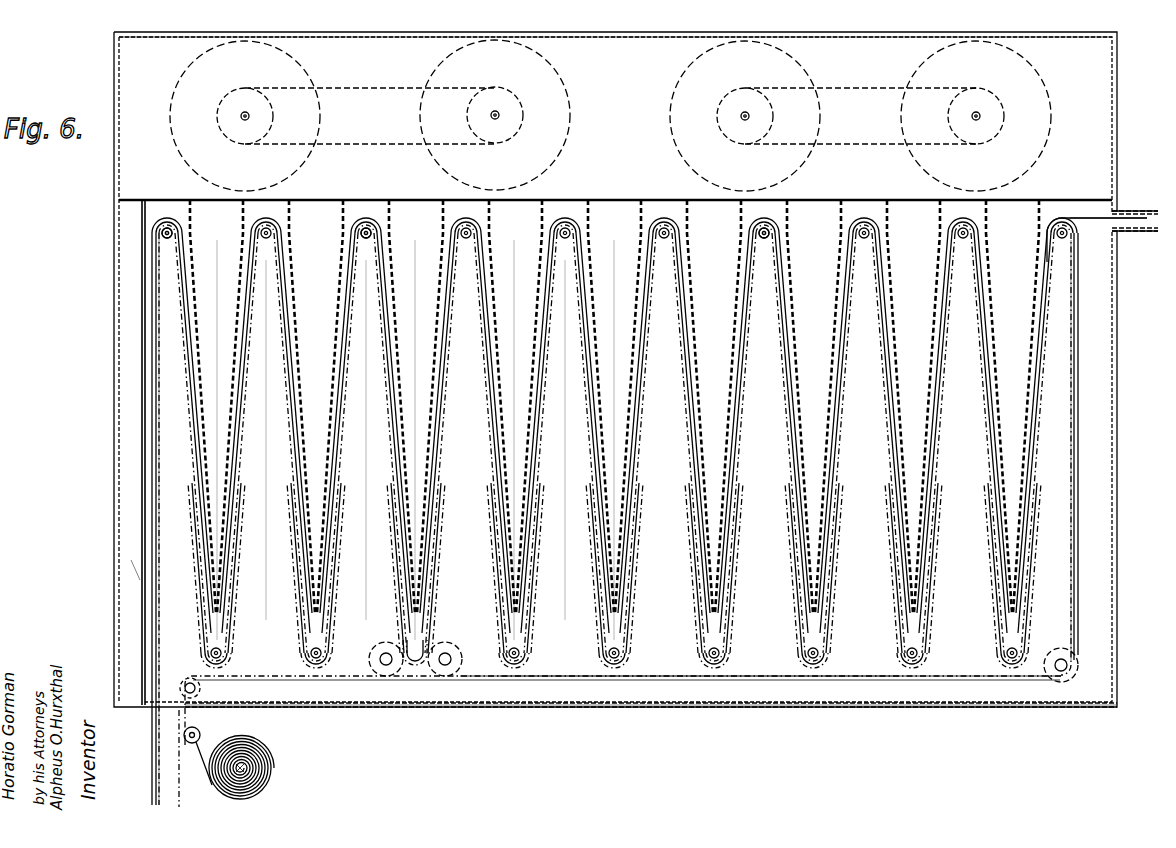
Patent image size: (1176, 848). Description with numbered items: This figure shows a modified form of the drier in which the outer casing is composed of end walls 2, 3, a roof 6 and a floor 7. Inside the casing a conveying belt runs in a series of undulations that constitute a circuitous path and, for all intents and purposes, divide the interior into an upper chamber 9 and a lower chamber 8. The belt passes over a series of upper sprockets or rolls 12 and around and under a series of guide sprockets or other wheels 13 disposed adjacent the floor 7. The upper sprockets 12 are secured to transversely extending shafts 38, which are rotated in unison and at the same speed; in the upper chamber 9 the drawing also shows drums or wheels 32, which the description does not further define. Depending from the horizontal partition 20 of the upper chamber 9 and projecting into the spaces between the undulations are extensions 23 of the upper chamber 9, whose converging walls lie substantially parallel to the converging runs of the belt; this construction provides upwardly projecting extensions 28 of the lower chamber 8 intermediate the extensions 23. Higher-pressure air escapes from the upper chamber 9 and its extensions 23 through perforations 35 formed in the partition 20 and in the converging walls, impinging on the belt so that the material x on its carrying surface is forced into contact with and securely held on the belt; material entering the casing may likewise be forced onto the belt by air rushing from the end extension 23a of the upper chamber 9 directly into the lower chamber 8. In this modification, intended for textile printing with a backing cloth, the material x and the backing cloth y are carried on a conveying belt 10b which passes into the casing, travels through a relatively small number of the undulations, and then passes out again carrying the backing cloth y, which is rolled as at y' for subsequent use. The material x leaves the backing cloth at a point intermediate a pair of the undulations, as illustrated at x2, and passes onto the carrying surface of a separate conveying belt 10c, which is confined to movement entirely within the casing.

The end wall 2 is at (114, 378).
The end wall 3 is at (1117, 340).
The roof 6 is at (624, 36).
The floor 7 is at (602, 704).
The lower chamber 8 is at (700, 687).
The upper chamber 9 is at (615, 187).
The upper sprockets or rolls 12 is at (165, 248).
The guide sprockets or wheels 13 is at (222, 652).
The horizontal partition 20 is at (576, 191).
The extensions of the upper chamber 23 is at (417, 440).
The upwardly projecting extensions of the lower chamber 28 is at (410, 440).
The drums 32 is at (300, 160).
The perforations 35 is at (366, 208).
The transversely extending shafts 38 is at (174, 232).
The end extension of the upper chamber 23a is at (131, 566).
The conveying belt 10b is at (290, 676).
The separate conveying belt 10c is at (486, 676).
The material x is at (1138, 218).
The point where material leaves the backing cloth x2 is at (414, 666).
The backing cloth y is at (216, 526).
The roll of backing cloth y' is at (268, 767).